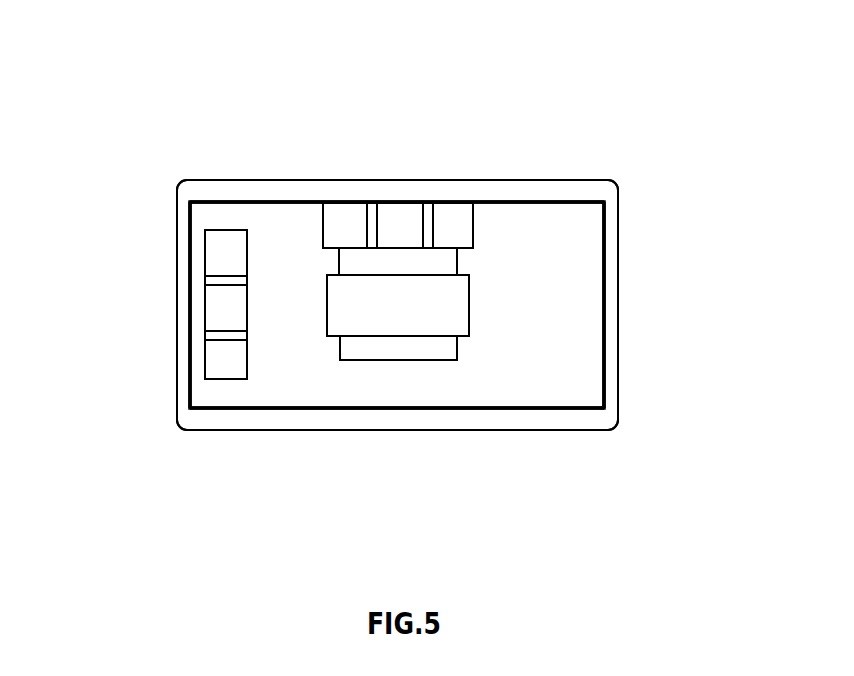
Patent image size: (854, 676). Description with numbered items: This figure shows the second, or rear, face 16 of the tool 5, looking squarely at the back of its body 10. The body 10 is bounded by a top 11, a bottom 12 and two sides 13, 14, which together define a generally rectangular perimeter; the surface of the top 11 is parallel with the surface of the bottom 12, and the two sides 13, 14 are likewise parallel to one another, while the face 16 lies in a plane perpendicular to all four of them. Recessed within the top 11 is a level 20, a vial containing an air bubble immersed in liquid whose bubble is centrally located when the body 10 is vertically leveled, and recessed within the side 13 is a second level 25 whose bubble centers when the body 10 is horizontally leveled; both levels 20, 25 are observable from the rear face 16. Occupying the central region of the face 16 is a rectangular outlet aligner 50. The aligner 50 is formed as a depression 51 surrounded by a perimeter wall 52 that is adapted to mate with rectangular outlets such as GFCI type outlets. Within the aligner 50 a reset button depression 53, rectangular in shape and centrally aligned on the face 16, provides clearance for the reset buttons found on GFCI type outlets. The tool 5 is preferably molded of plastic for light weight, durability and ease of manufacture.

The tool 5 is at (139, 460).
The body 10 is at (280, 180).
The top 11 is at (177, 247).
The bottom 12 is at (620, 238).
The side 13 is at (530, 180).
The side 14 is at (482, 428).
The rear face 16 is at (513, 385).
The level 20 is at (230, 308).
The level 25 is at (388, 222).
The rectangular outlet aligner 50 is at (578, 323).
The depression 51 is at (530, 349).
The perimeter wall 52 is at (305, 408).
The reset button depression 53 is at (397, 345).